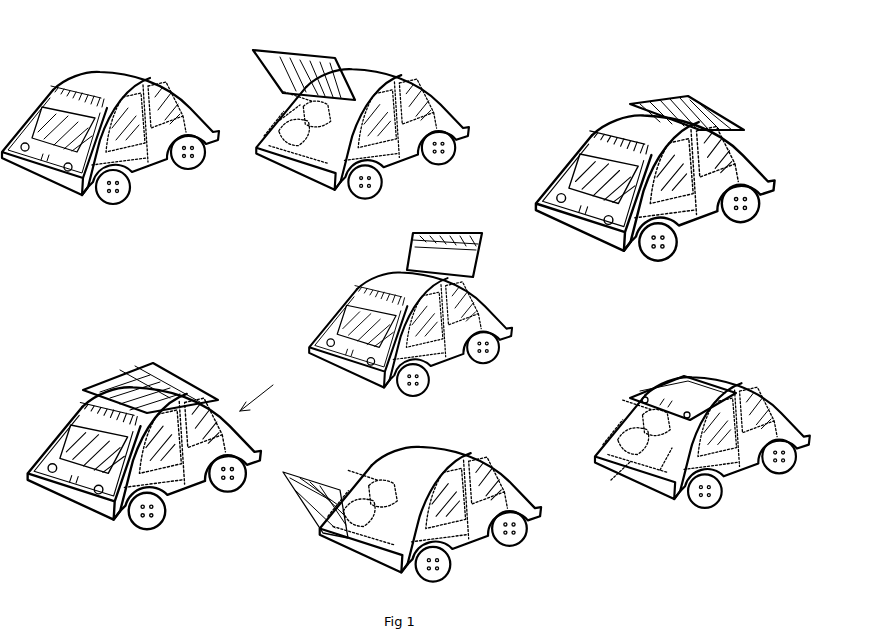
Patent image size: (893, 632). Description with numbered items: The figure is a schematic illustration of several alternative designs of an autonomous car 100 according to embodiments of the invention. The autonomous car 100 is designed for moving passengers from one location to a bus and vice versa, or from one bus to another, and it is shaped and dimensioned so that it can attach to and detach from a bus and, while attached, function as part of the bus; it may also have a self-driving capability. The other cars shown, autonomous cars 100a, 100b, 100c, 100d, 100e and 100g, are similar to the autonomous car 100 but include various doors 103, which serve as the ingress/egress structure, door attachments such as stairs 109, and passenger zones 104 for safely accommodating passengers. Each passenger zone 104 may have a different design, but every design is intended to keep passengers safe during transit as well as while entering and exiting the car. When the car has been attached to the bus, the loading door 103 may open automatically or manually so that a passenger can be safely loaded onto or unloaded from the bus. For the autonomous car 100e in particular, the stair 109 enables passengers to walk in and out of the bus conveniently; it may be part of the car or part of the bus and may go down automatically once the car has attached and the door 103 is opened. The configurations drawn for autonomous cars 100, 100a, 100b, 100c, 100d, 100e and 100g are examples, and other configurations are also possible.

The autonomous car 100 is at (80, 71).
The autonomous car 100a is at (386, 62).
The autonomous car 100b is at (700, 216).
The autonomous car 100c is at (378, 270).
The autonomous car 100d is at (740, 480).
The autonomous car 100e is at (478, 456).
The autonomous car 100g is at (187, 492).
The door 103 is at (326, 48).
The passenger zone 104 is at (298, 160).
The stairs 109 is at (326, 478).